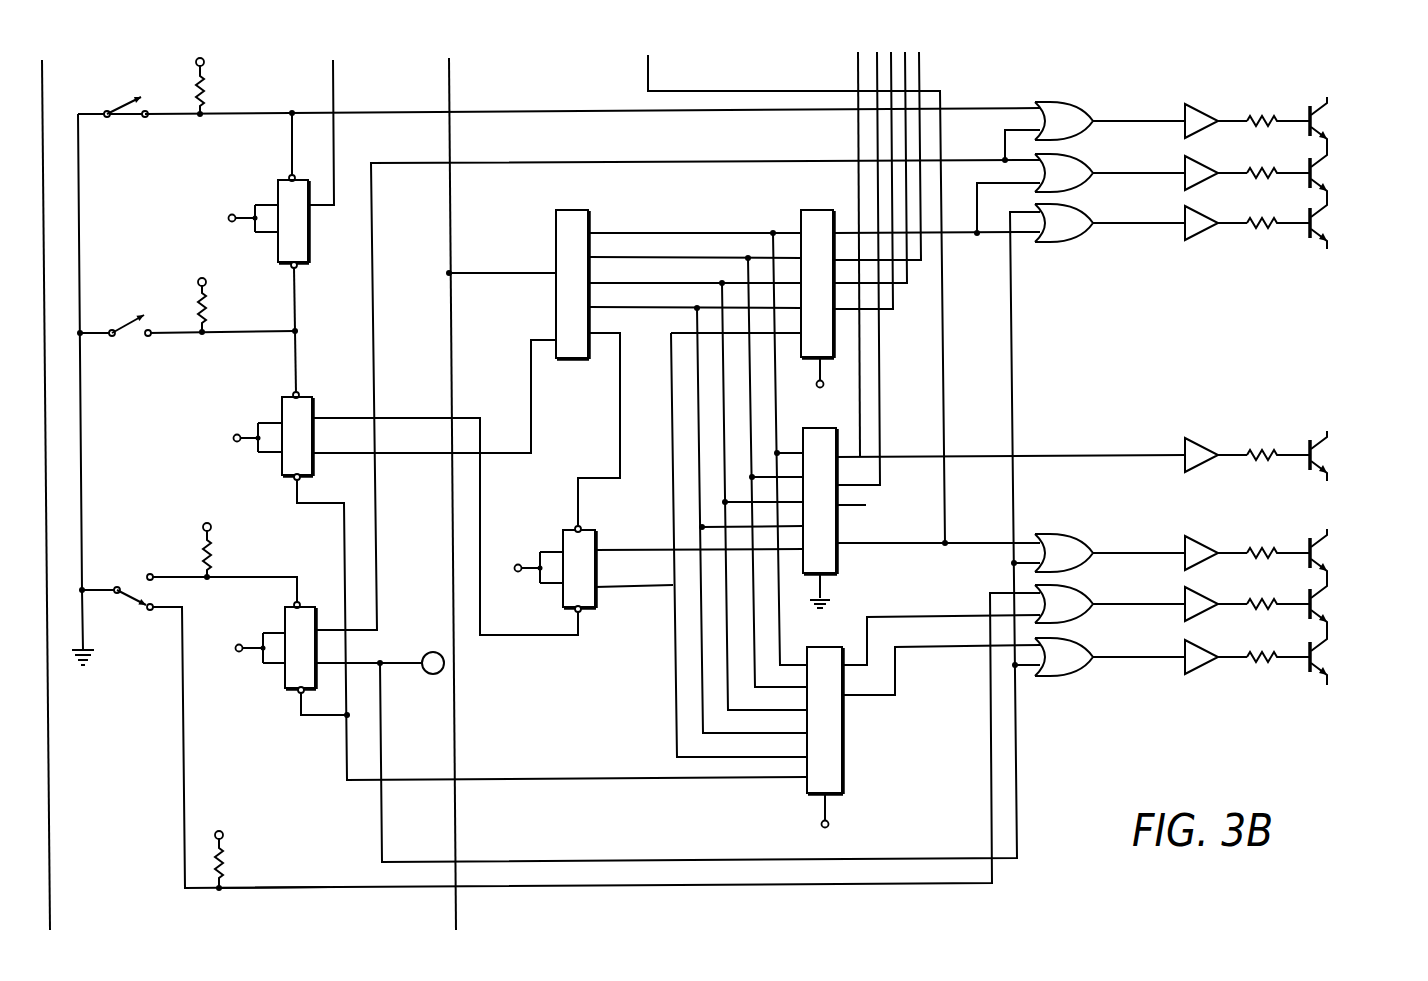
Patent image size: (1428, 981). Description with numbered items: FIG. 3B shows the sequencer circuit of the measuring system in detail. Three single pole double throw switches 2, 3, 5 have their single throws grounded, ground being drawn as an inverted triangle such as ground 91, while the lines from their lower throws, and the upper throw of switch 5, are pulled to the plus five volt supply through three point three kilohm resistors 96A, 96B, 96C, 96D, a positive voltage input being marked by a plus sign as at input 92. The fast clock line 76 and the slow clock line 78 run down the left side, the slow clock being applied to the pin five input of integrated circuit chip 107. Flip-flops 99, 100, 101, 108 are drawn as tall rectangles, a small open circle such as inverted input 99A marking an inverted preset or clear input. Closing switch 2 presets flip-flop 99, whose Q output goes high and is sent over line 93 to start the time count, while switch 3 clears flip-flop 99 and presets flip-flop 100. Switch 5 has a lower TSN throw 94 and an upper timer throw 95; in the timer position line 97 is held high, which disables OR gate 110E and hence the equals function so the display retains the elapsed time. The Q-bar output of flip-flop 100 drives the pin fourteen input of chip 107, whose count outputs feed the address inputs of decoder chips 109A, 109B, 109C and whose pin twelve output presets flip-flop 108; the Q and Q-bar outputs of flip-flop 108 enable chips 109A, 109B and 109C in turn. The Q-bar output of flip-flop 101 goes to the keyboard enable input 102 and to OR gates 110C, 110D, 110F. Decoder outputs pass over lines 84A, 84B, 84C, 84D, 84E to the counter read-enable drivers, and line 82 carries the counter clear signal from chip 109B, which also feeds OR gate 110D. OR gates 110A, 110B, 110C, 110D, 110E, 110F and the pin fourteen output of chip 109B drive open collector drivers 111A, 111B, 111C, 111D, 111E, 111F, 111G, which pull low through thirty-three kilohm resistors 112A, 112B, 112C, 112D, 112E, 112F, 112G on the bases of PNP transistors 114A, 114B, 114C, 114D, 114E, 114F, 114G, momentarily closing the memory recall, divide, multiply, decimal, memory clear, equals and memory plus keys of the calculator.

The fast clock line 76 is at (41, 104).
The line 78 is at (451, 210).
The switch 2 is at (112, 108).
The switch 3 is at (124, 328).
The switch 5 is at (132, 586).
The line 93 is at (336, 132).
The TSN switch contact 94 is at (147, 612).
The timer switch contact 95 is at (160, 574).
The resistor 96A is at (207, 94).
The resistor 96B is at (208, 312).
The resistor 96C is at (223, 862).
The resistor 96D is at (212, 556).
The line 97 is at (290, 887).
The flip-flop 99 is at (310, 236).
The inverted input 99A is at (297, 272).
The flip-flop 100 is at (314, 462).
The flip-flop 101 is at (283, 676).
The keyboard enable input 102 is at (428, 652).
The ground 91 is at (90, 652).
The positive voltage input 92 is at (239, 655).
The integrated circuit chip 107 is at (574, 210).
The flip-flop 108 is at (592, 532).
The integrated circuit chip 109A is at (820, 207).
The integrated circuit chip 109B is at (840, 534).
The integrated circuit chip 109C is at (845, 731).
The line 82 is at (944, 492).
The line 84A is at (868, 509).
The line 84B is at (882, 375).
The line 84C is at (894, 316).
The line 84D is at (908, 290).
The line 84E is at (922, 264).
The OR gate 110A is at (1080, 102).
The OR gate 110B is at (1083, 156).
The OR gate 110C is at (1088, 206).
The OR gate 110D is at (1082, 534).
The OR gate 110E is at (1086, 586).
The OR gate 110F is at (1090, 640).
The open collector driver 111A is at (1192, 104).
The driver 111B is at (1192, 156).
The driver amplifier 111C is at (1192, 206).
The open collector driver 111D is at (1196, 438).
The driver amplifier 111E is at (1194, 536).
The driver amplifier 111F is at (1194, 587).
The driver amplifier 111G is at (1194, 640).
The resistor 112A is at (1258, 115).
The resistor 112B is at (1258, 167).
The resistor 112C is at (1258, 217).
The resistor 112D is at (1262, 449).
The resistor 112E is at (1262, 547).
The resistor 112F is at (1262, 598).
The resistor 112G is at (1262, 651).
The transistor 114A is at (1330, 122).
The transistor 114B is at (1330, 174).
The transistor (X) 114C is at (1330, 224).
The transistor 114D is at (1330, 456).
The transistor (mc) 114E is at (1330, 554).
The transistor (=) 114F is at (1330, 605).
The transistor (M+) 114G is at (1330, 658).